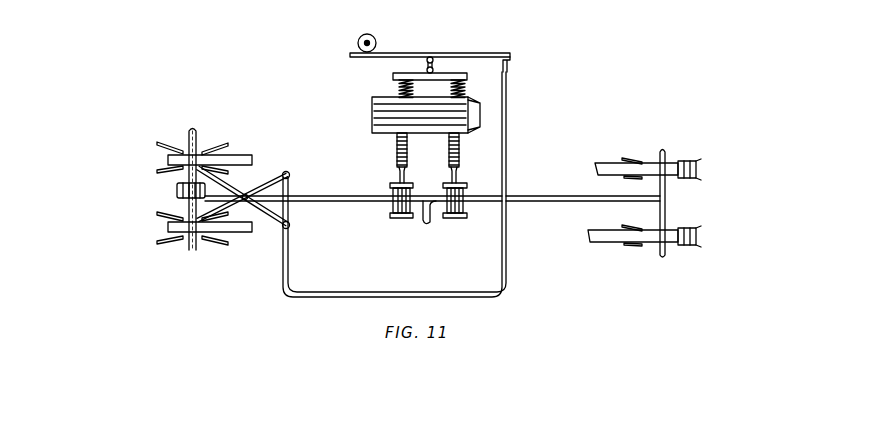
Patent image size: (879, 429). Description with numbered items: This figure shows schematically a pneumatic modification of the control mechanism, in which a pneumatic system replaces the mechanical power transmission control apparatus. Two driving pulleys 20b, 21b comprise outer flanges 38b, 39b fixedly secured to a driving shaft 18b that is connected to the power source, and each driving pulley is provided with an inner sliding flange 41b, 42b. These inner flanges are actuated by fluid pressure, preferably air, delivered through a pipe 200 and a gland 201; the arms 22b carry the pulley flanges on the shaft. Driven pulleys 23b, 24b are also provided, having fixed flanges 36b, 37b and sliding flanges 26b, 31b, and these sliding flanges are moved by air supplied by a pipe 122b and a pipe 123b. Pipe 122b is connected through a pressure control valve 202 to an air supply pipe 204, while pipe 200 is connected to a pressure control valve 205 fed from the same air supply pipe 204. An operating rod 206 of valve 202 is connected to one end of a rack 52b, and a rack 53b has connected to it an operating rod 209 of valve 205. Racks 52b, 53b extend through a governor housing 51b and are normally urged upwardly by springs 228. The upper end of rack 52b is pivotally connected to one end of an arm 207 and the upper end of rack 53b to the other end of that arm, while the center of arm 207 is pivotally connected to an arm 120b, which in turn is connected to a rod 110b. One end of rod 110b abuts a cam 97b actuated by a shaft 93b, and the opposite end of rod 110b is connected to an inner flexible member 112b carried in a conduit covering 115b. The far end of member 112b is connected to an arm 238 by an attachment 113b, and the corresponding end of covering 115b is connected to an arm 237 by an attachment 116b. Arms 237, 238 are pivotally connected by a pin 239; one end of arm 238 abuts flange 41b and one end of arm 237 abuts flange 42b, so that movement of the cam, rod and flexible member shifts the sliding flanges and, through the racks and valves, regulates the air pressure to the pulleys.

The driving shaft 18b is at (197, 130).
The driving pulley 20b is at (166, 158).
The driving pulley 21b is at (166, 231).
The arm 22b is at (238, 156).
The driven pulley 23b is at (712, 166).
The driven pulley 24b is at (708, 238).
The sliding flange 26b is at (690, 160).
The sliding flange 31b is at (691, 246).
The fixed flange 36b is at (695, 180).
The fixed flange 37b is at (688, 228).
The outer flange 38b is at (163, 142).
The outer flange 39b is at (162, 244).
The inner sliding flange 41b is at (158, 169).
The inner sliding flange 42b is at (158, 216).
The governor housing 51b is at (384, 124).
The rack 52b is at (461, 148).
The rack 53b is at (396, 157).
The shaft 93b is at (358, 43).
The cam 97b is at (366, 34).
The rod 110b is at (392, 52).
The inner flexible member 112b is at (512, 60).
The attachment 113b is at (291, 175).
The conduit covering 115b is at (508, 90).
The attachment 116b is at (291, 227).
The arm 120b is at (438, 56).
The pipe 122b is at (546, 197).
The pipe 123b is at (660, 191).
The pipe 200 is at (316, 197).
The gland 201 is at (177, 190).
The pressure control valve 202 is at (456, 205).
The air supply pipe 204 is at (424, 218).
The pressure control valve 205 is at (392, 208).
The operating rod 206 is at (458, 182).
The arm 207 is at (448, 74).
The operating rod 209 is at (399, 180).
The spring 228 is at (398, 89).
The arm 237 is at (270, 212).
The arm 238 is at (276, 176).
The pin 239 is at (246, 194).